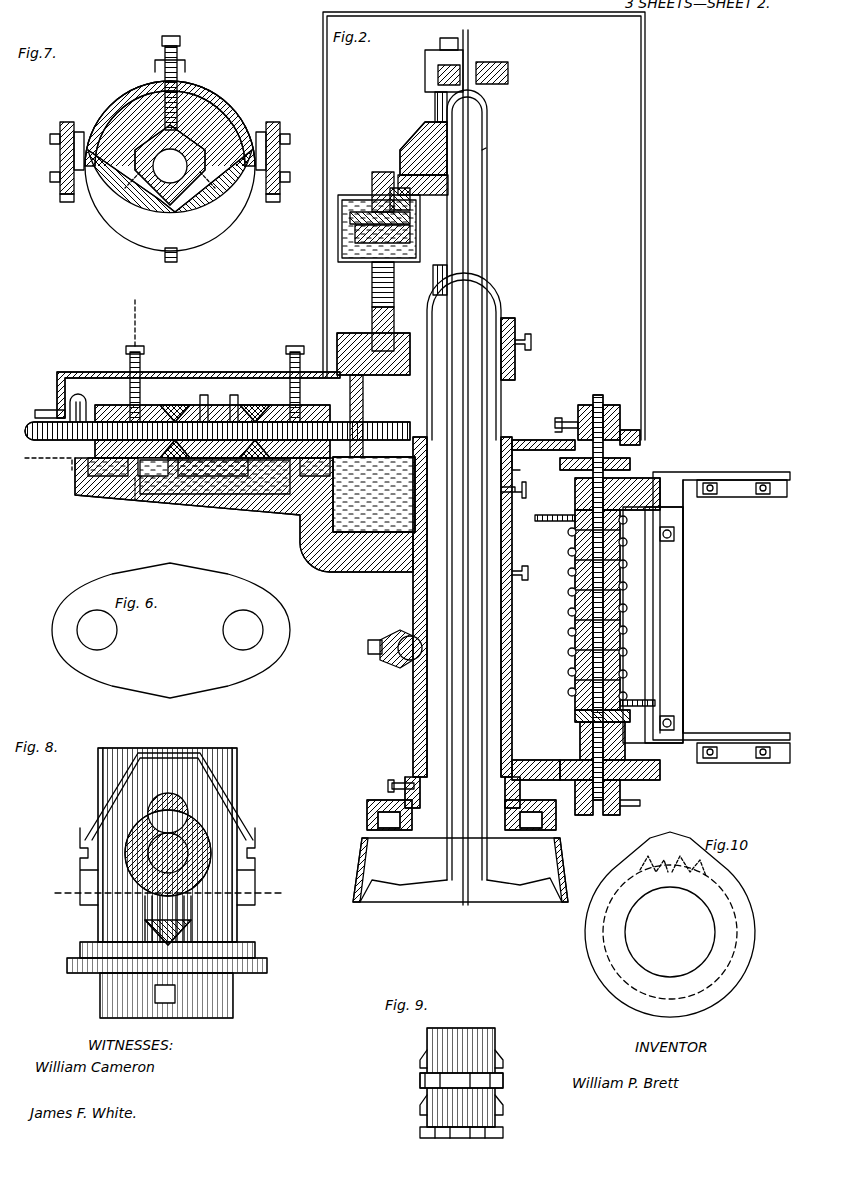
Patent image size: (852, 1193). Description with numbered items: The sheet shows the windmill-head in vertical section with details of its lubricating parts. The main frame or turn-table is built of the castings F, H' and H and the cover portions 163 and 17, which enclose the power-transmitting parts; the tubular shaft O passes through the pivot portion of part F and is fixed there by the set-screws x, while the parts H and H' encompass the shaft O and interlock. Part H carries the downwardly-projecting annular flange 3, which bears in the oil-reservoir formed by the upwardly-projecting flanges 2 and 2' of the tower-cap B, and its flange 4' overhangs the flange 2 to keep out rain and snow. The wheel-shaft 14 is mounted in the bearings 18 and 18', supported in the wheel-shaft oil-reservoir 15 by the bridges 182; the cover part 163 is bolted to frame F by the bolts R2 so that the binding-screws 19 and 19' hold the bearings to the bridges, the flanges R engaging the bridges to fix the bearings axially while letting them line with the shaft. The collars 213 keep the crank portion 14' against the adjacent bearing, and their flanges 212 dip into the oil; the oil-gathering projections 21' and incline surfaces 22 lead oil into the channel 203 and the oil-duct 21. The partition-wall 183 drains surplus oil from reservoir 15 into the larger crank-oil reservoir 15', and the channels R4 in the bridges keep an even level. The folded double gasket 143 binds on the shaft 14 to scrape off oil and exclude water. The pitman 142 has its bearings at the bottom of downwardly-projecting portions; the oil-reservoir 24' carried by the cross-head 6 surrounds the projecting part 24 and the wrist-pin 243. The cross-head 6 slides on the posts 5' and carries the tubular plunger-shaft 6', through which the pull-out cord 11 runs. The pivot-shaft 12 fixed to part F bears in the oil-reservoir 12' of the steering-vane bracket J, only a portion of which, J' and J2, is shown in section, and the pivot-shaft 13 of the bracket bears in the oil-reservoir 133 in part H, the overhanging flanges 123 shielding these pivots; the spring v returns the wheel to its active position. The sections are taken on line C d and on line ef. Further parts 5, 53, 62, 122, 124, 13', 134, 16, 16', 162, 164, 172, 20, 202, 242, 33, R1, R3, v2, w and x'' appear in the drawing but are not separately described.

In FIG. 2, the annular flange 2 is at (459, 840).
In FIG. 2, the annular flange 2' is at (411, 853).
In FIG. 2, the annular flange 3 is at (390, 786).
In FIG. 2, the annular flange 4' is at (445, 808).
In FIG. 2, the set screw 5 is at (519, 344).
In FIG. 2, the posts or guides 5' is at (426, 193).
In FIG. 2, the top cross head 53 is at (516, 70).
In FIG. 2, the cross-head 6 is at (421, 157).
In FIG. 2, the plunger-shaft 6' is at (477, 485).
In FIG. 2, the tube fitting 62 is at (486, 150).
In FIG. 2, the pull-out cord 11 is at (469, 45).
In FIG. 2, the pivot-shaft 12 is at (604, 582).
In FIG. 2, the oil-reservoir 12' is at (641, 450).
In FIG. 2, the block 122 is at (575, 492).
In FIG. 2, the overhanging annular flanges 123 is at (560, 466).
In FIG. 2, the bracket 124 is at (580, 423).
In FIG. 2, the pivot-shaft 13 is at (597, 806).
In FIG. 2, the lug 13' is at (637, 792).
In FIG. 2, the oil-reservoir 133 is at (586, 764).
In FIG. 2, the block 134 is at (580, 755).
In FIG. 2, the wheel-shaft 14 is at (210, 418).
In FIG. 2, the crank portion 14' is at (371, 444).
In FIG. 2, the pitman 142 is at (372, 318).
In FIG. 2, the double flexible washer or gasket 143 is at (70, 476).
In FIG. 6, the double flexible washer or gasket 143 is at (171, 630).
In FIG. 2, the wheel-shaft oil-reservoir 15 is at (214, 476).
In FIG. 2, the crank-oil reservoir 15' is at (374, 494).
In FIG. 2, the plate 16 is at (543, 442).
In FIG. 2, the plate 16' is at (658, 421).
In FIG. 2, the gear block 162 is at (337, 337).
In FIG. 7, the cover part 163 is at (208, 88).
In FIG. 2, the cover part 163 is at (200, 372).
In FIG. 2, the cover flange 164 is at (48, 410).
In FIG. 2, the cover portion 17 is at (325, 130).
In FIG. 7, the frame plate 172 is at (300, 166).
In FIG. 2, the frame plate 172 is at (645, 450).
In FIG. 2, the wheel-shaft bearing 18 is at (200, 421).
In FIG. 2, the wheel-shaft bearing 18' is at (323, 393).
In FIG. 7, the bridges 182 is at (170, 181).
In FIG. 2, the bridges 182 is at (285, 500).
In FIG. 2, the partition-wall 183 is at (310, 480).
In FIG. 7, the binding-screw 19 is at (185, 141).
In FIG. 2, the binding-screw 19 is at (112, 378).
In FIG. 2, the binding-screw 19' is at (279, 371).
In FIG. 8, the cylinder body 20 is at (250, 852).
In FIG. 9, the cylinder body 20 is at (495, 1082).
In FIG. 8, the flange 202 is at (255, 948).
In FIG. 9, the flange 202 is at (420, 1132).
In FIG. 8, the channel 203 is at (150, 925).
In FIG. 10, the channel 203 is at (646, 850).
In FIG. 7, the oil-duct 21 is at (161, 165).
In FIG. 2, the oil-duct 21 is at (219, 422).
In FIG. 8, the oil-duct 21 is at (170, 867).
In FIG. 10, the oil-duct 21 is at (670, 931).
In FIG. 2, the oil-gathering projections 21' is at (217, 377).
In FIG. 8, the oil-gathering projections 21' is at (136, 976).
In FIG. 10, the oil-gathering projections 21' is at (688, 842).
In FIG. 2, the flanges 212 is at (248, 400).
In FIG. 8, the flanges 212 is at (267, 966).
In FIG. 2, the collars 213 is at (219, 394).
In FIG. 8, the collars 213 is at (220, 1000).
In FIG. 8, the incline surfaces 22 is at (145, 935).
In FIG. 2, the downwardly-projecting part 24 is at (391, 228).
In FIG. 2, the oil-reservoir 24' is at (362, 284).
In FIG. 2, the cap 242 is at (410, 204).
In FIG. 2, the wrist-pin 243 is at (410, 224).
In FIG. 2, the rail 33 is at (735, 480).
In FIG. 2, the tower-cap B is at (565, 860).
In FIG. 2, the section line c–d C is at (135, 314).
In FIG. 7, the main frame part F is at (200, 245).
In FIG. 2, the main frame part F is at (215, 490).
In FIG. 2, the main frame part H is at (446, 776).
In FIG. 2, the main frame part H' is at (443, 525).
In FIG. 2, the steering-vane bracket J is at (721, 594).
In FIG. 2, the bracket plate J' is at (653, 625).
In FIG. 2, the pivot J2 is at (675, 534).
In FIG. 2, the tubular shaft O is at (505, 872).
In FIG. 7, the flanges R is at (208, 168).
In FIG. 8, the flanges R is at (80, 830).
In FIG. 9, the flanges R is at (420, 1062).
In FIG. 10, the flanges R is at (590, 930).
In FIG. 7, the ring part R1 is at (115, 180).
In FIG. 7, the bolts R2 is at (290, 120).
In FIG. 7, the clamp R3 is at (80, 135).
In FIG. 7, the channels R4 is at (168, 208).
In FIG. 2, the channels R4 is at (196, 466).
In FIG. 2, the section line c– d is at (134, 500).
In FIG. 8, the section line e–f ef is at (172, 884).
In FIG. 2, the spring v is at (595, 610).
In FIG. 2, the spring seat v2 is at (575, 660).
In FIG. 2, the washer w is at (575, 716).
In FIG. 2, the set-screws x is at (520, 531).
In FIG. 8, the section line x'' is at (169, 786).